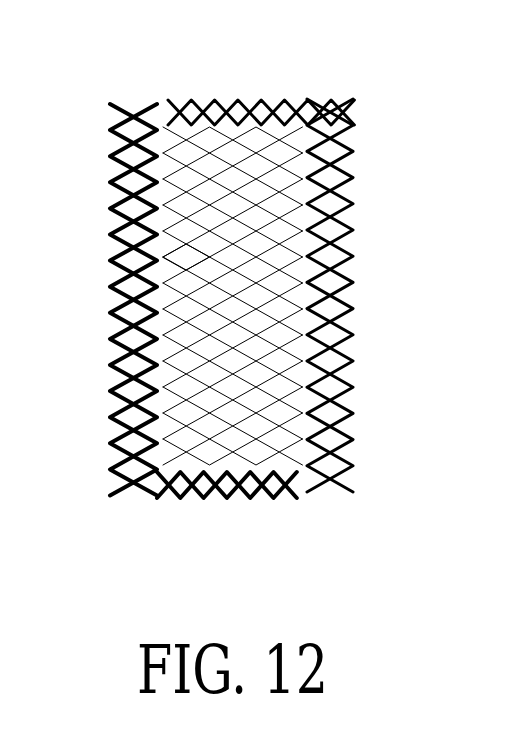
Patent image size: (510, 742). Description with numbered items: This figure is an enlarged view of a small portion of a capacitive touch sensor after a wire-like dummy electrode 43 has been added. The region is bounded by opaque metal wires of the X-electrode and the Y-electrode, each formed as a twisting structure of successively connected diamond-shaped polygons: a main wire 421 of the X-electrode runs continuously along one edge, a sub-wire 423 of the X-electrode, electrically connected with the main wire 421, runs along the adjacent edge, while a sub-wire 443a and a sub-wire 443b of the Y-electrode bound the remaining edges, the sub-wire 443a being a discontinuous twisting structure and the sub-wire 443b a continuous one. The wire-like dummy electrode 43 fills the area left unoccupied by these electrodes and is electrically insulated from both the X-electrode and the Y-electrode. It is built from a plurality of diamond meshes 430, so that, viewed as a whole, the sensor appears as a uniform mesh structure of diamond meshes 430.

The wire-like dummy electrode 43 is at (166, 226).
The diamond mesh 430 is at (178, 260).
The main wire 421 is at (348, 245).
The sub-wire 423 is at (235, 108).
The sub-wire 443a is at (181, 495).
The sub-wire 443b is at (117, 175).